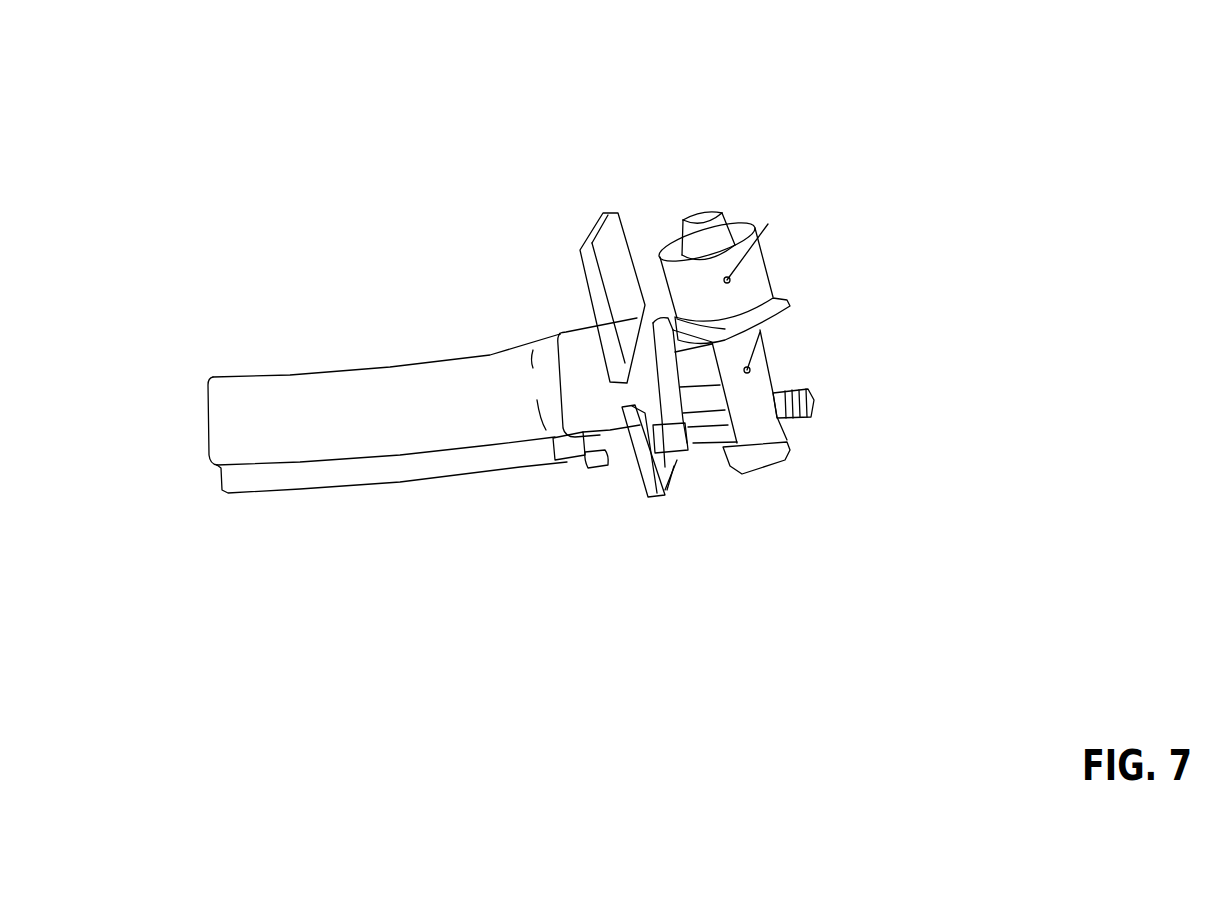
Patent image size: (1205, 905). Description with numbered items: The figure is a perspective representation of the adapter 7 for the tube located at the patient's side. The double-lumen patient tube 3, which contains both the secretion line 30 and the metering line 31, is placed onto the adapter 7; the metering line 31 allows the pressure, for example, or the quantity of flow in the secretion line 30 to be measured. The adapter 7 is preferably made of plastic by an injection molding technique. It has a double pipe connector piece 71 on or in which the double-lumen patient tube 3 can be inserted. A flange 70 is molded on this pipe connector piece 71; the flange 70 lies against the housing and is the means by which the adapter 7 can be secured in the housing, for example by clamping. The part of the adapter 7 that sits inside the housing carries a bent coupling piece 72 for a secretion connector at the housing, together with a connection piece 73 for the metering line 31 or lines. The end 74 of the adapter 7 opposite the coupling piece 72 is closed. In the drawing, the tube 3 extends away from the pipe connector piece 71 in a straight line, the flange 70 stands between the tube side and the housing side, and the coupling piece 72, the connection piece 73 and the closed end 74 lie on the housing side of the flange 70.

The double-lumen patient tube 3 is at (271, 300).
The adapter 7 is at (676, 149).
The secretion line 30 is at (440, 373).
The metering line 31 is at (355, 487).
The flange 70 is at (665, 490).
The double pipe connector piece 71 is at (605, 467).
The bent coupling piece 72 is at (703, 212).
The connection piece 73 is at (816, 398).
The closed end 74 is at (782, 457).